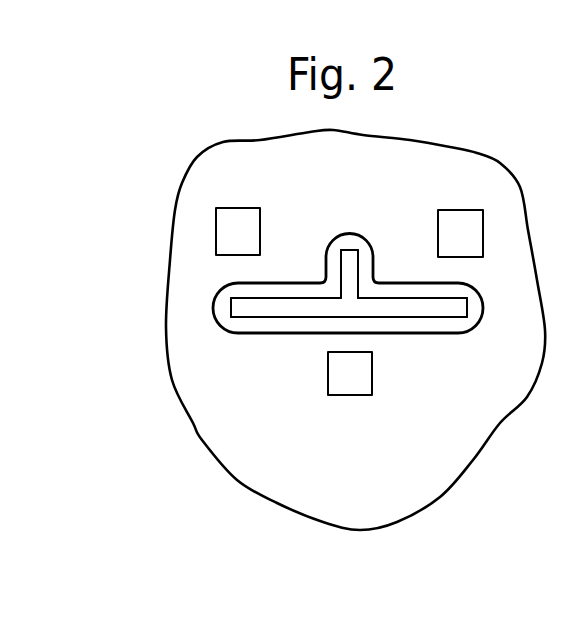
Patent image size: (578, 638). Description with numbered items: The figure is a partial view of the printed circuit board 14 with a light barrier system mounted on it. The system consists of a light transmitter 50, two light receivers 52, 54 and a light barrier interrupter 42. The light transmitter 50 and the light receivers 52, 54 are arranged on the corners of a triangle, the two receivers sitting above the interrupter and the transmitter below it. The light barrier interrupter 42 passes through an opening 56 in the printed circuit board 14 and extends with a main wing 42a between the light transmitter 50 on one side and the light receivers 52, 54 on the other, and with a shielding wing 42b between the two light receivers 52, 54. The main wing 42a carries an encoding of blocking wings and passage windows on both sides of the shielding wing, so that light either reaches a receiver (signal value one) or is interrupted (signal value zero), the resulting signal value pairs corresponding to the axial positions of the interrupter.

The printed circuit board 14 is at (208, 408).
The light barrier interrupter 42 is at (443, 318).
The main wing 42a is at (283, 312).
The shielding wing 42b is at (350, 258).
The light transmitter 50 is at (350, 387).
The light receiver 52 is at (222, 230).
The light receiver 54 is at (470, 230).
The opening 56 is at (220, 317).